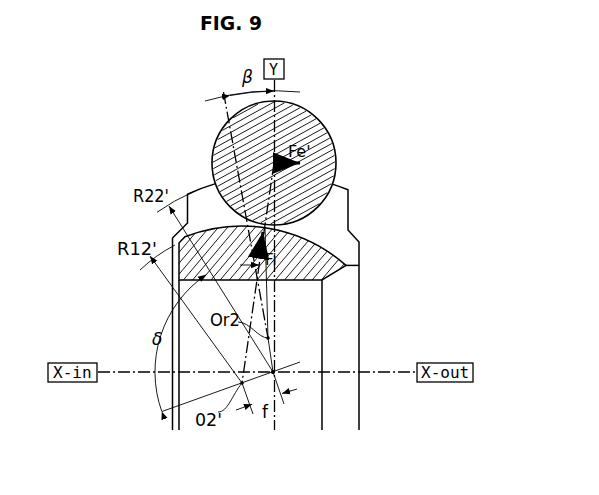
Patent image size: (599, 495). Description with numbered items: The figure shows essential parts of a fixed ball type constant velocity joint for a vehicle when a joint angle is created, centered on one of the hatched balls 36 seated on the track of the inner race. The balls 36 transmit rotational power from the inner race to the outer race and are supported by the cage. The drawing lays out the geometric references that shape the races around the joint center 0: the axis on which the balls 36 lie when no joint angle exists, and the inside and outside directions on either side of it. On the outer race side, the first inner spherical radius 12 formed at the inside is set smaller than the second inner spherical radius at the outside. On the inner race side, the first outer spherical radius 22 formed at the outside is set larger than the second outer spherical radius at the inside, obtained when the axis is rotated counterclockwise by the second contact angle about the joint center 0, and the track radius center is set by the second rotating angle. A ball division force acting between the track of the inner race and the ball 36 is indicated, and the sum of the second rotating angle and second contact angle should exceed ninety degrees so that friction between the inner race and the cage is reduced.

The balls 36 is at (337, 164).
The bearing center point 0 is at (273, 372).
The ball (radius R12) 12 is at (282, 163).
The outer ring raceway (radius R22) 22 is at (273, 372).